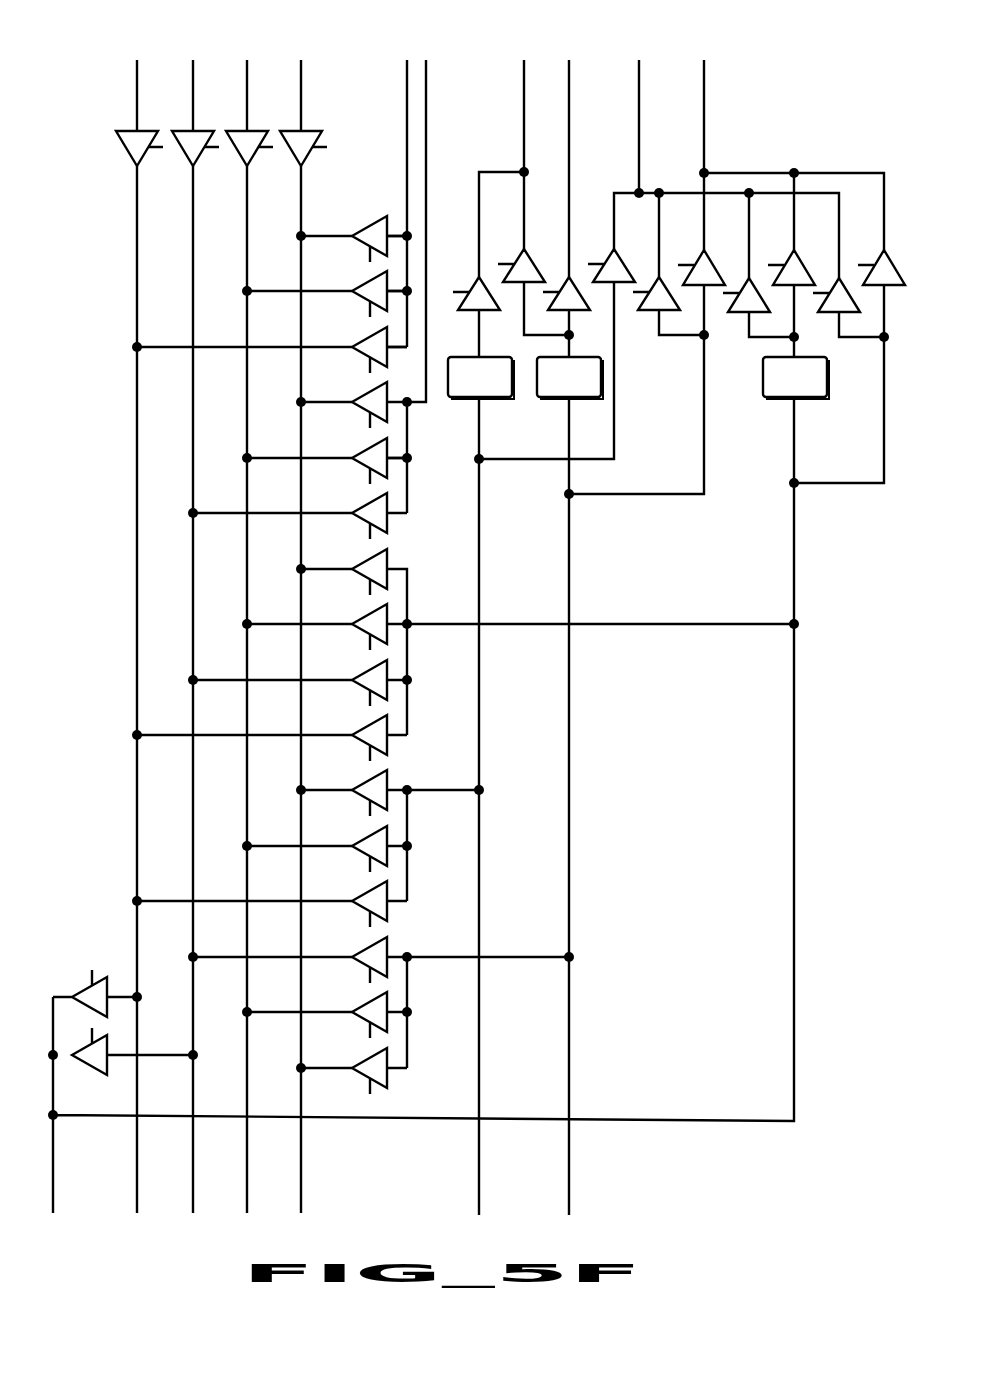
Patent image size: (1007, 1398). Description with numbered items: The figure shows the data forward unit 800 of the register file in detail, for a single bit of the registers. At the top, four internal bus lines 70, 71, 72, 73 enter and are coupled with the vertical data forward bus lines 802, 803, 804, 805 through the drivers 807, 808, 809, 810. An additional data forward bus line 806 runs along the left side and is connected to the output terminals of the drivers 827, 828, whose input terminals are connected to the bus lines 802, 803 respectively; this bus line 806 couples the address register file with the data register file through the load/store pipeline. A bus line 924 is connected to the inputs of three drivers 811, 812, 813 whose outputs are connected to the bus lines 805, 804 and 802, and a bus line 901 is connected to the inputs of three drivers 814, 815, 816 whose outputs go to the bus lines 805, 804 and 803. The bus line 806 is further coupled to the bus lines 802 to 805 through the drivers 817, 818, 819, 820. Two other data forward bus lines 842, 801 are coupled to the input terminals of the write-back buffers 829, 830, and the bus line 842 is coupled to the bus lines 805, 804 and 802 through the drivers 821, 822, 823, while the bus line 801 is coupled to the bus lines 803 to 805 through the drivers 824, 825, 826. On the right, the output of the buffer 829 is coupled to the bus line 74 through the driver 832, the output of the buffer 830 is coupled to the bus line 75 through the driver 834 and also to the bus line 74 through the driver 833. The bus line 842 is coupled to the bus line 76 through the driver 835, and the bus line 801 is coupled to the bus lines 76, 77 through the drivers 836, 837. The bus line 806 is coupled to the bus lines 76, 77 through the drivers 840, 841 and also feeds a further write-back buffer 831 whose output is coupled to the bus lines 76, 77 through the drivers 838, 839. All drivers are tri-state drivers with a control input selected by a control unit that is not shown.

The internal bus line 70 is at (137, 82).
The internal bus line 71 is at (193, 82).
The internal bus line 72 is at (247, 82).
The internal bus line 73 is at (301, 82).
The bus line 924 is at (407, 82).
The bus line 901 is at (426, 82).
The bus line 74 is at (524, 82).
The bus line 75 is at (569, 82).
The bus line 76 is at (639, 82).
The bus line 77 is at (704, 82).
The data forward unit 800 is at (116, 547).
The data forward bus line 801 is at (569, 1152).
The data forward bus line 802 is at (137, 1148).
The data forward bus line 803 is at (193, 1148).
The data forward bus line 804 is at (247, 1148).
The data forward bus line 805 is at (301, 1148).
The additional data forward bus line 806 is at (53, 1148).
The driver 807 is at (128, 152).
The driver 808 is at (184, 152).
The driver 809 is at (238, 152).
The driver 810 is at (292, 152).
The driver 811 is at (363, 222).
The driver 812 is at (363, 277).
The driver 813 is at (363, 333).
The driver 814 is at (363, 388).
The driver 815 is at (363, 444).
The driver 816 is at (363, 499).
The driver 817 is at (363, 555).
The driver 818 is at (363, 610).
The driver 819 is at (363, 666).
The driver 820 is at (363, 721).
The driver 821 is at (363, 776).
The driver 822 is at (363, 832).
The driver 823 is at (363, 887).
The driver 824 is at (363, 943).
The driver 825 is at (363, 998).
The driver 826 is at (363, 1054).
The driver 827 is at (85, 985).
The driver 828 is at (86, 1063).
The write-back buffer 829 is at (495, 397).
The write-back buffer 830 is at (584, 397).
The write-back buffer 831 is at (812, 397).
The driver 832 is at (471, 283).
The driver 833 is at (516, 256).
The driver 834 is at (562, 275).
The driver 835 is at (607, 256).
The driver 836 is at (651, 275).
The driver 837 is at (698, 256).
The driver 838 is at (745, 282).
The driver 839 is at (786, 258).
The driver 840 is at (835, 282).
The driver 841 is at (876, 258).
The data forward bus line 842 is at (479, 1152).